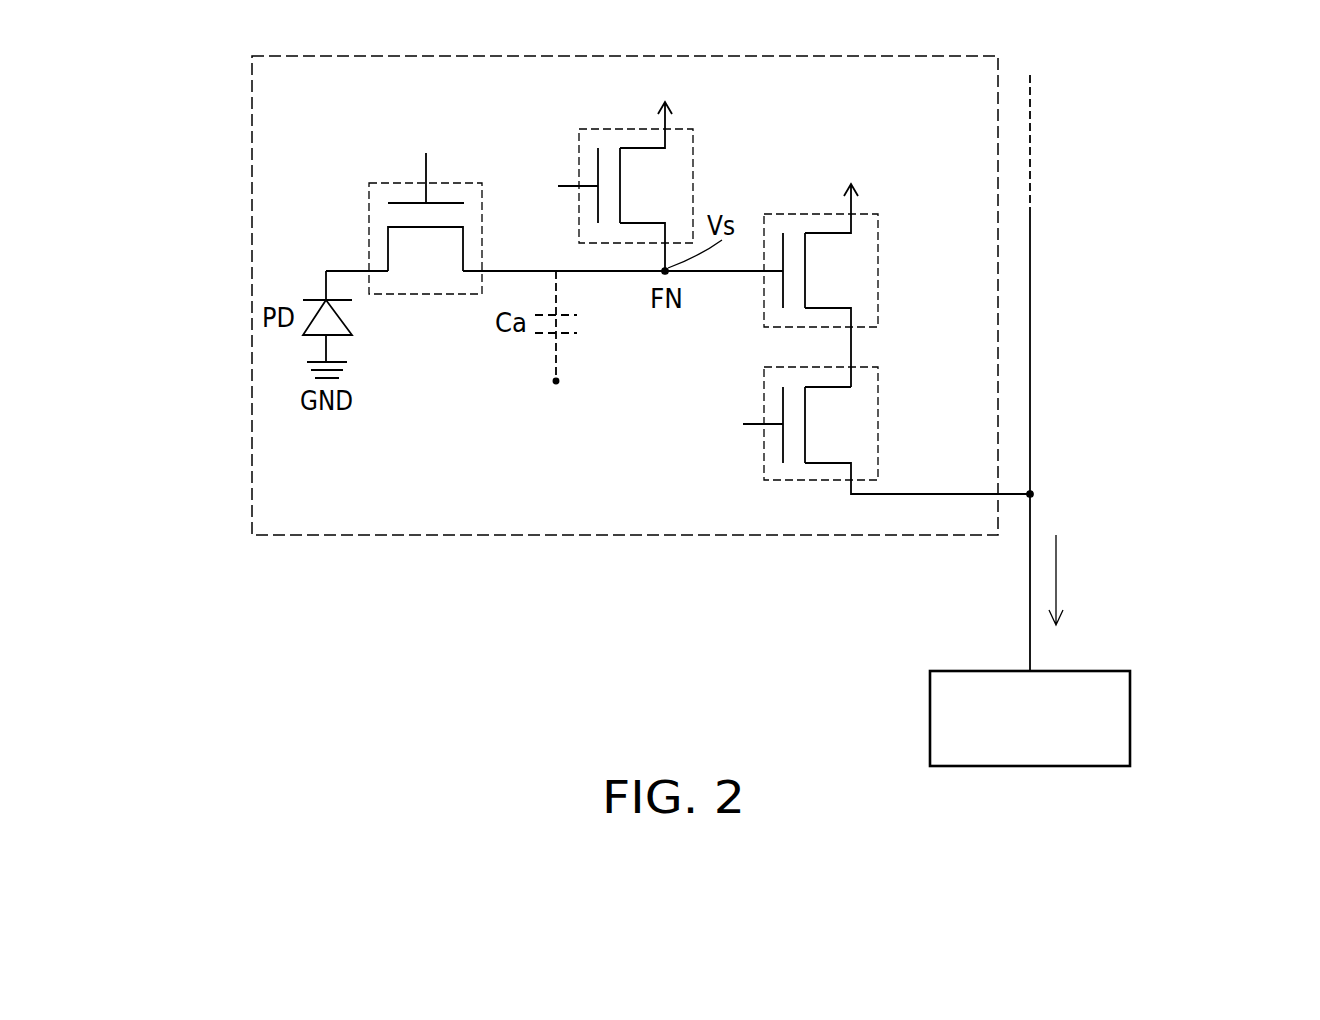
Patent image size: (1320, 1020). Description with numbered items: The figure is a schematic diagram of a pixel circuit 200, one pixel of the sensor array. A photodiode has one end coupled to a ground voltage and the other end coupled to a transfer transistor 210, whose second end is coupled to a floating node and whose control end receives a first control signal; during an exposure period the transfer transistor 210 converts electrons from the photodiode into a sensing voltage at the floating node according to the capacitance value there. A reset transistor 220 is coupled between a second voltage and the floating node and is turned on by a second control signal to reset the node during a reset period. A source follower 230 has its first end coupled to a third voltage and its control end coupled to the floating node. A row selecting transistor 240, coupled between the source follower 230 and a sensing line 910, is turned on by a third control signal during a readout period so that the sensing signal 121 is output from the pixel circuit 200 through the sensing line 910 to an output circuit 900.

The pixel circuit 200 is at (252, 503).
The transfer transistor 210 is at (369, 208).
The reset transistor 220 is at (591, 129).
The source follower 230 is at (878, 271).
The row selecting transistor 240 is at (878, 424).
The sensing line 910 is at (1032, 268).
The sensing signal 121 is at (1058, 580).
The output circuit 900 is at (1130, 718).